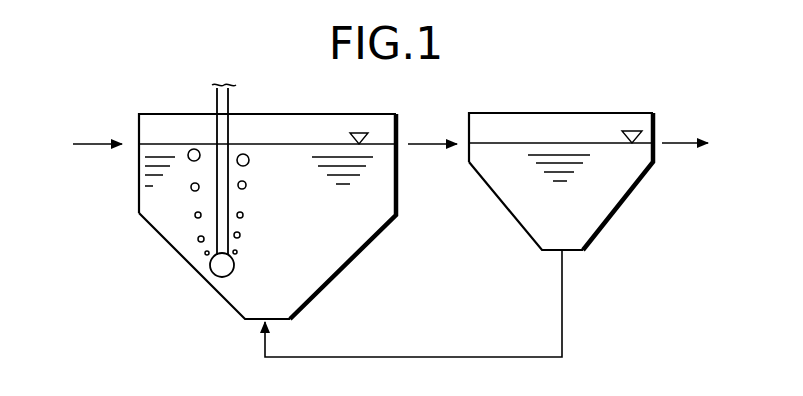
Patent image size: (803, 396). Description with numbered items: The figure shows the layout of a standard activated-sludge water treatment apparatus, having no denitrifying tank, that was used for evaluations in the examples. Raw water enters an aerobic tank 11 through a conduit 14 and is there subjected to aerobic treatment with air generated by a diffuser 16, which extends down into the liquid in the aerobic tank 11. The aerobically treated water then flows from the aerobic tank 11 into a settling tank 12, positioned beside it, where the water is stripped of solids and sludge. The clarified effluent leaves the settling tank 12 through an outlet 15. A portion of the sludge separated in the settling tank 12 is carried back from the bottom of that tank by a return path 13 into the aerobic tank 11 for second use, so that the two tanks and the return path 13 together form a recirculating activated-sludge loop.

The aerobic tank 11 is at (165, 228).
The settling tank 12 is at (607, 200).
The return path 13 is at (562, 308).
The conduit 14 is at (82, 147).
The outlet 15 is at (680, 147).
The diffuser 16 is at (215, 267).